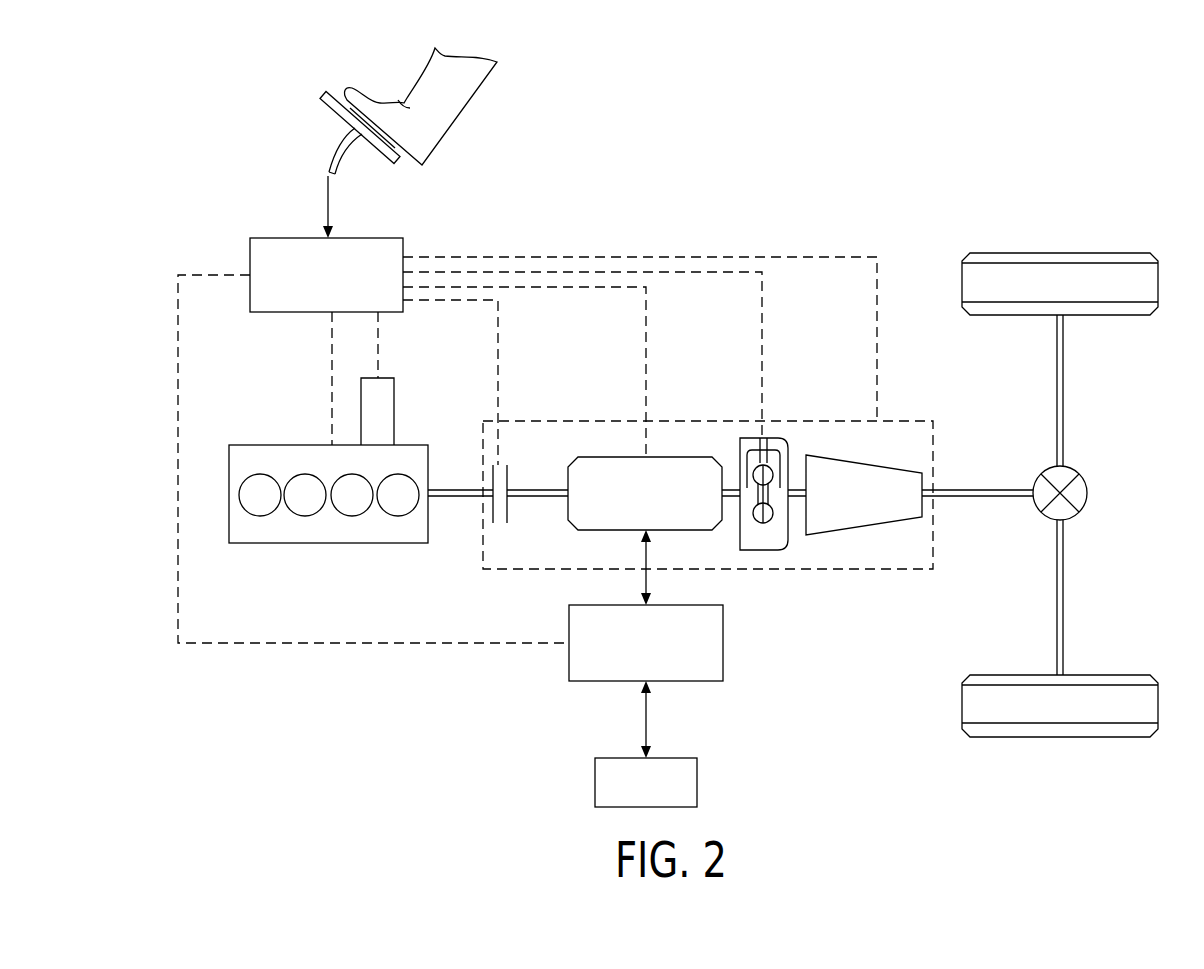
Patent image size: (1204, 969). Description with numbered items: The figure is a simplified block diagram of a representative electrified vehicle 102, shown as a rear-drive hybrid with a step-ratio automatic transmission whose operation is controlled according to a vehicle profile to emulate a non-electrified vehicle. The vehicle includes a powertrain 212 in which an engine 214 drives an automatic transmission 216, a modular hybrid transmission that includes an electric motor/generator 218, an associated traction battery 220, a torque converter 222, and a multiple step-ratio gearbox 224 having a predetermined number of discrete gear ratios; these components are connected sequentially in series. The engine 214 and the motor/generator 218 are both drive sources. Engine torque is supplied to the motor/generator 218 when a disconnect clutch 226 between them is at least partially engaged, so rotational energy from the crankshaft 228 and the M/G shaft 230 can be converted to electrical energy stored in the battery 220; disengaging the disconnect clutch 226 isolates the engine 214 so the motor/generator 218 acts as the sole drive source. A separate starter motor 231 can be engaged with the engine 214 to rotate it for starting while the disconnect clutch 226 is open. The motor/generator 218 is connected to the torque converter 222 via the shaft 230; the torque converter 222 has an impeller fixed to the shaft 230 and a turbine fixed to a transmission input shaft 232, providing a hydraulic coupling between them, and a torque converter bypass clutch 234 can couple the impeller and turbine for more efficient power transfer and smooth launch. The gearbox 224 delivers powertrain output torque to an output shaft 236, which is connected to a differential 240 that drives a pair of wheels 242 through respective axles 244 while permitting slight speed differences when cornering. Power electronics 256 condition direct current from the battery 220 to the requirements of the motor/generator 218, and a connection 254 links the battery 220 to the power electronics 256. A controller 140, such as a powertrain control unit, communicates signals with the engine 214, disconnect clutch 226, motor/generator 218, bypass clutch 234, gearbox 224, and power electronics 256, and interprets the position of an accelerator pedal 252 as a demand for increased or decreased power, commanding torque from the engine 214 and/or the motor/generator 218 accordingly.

The electrified vehicle 102 is at (940, 178).
The controller 140 is at (288, 238).
The powertrain 212 is at (447, 684).
The engine 214 is at (288, 445).
The automatic transmission 216 is at (682, 420).
The electric motor/generator (M/G) 218 is at (621, 457).
The traction battery 220 is at (697, 782).
The torque converter 222 is at (760, 551).
The gearbox 224 is at (852, 535).
The disconnect clutch 226 is at (494, 523).
The crankshaft 228 is at (460, 490).
The M/G shaft 230 is at (548, 490).
The starter motor 231 is at (394, 378).
The transmission input shaft 232 is at (797, 488).
The torque converter bypass clutch 234 is at (762, 440).
The output shaft 236 is at (982, 490).
The differential 240 is at (1088, 495).
The wheels 242 is at (1060, 253).
The axles 244 is at (1065, 405).
The accelerator pedal 252 is at (338, 112).
The battery power connection 254 is at (648, 722).
The power electronics 256 is at (723, 648).